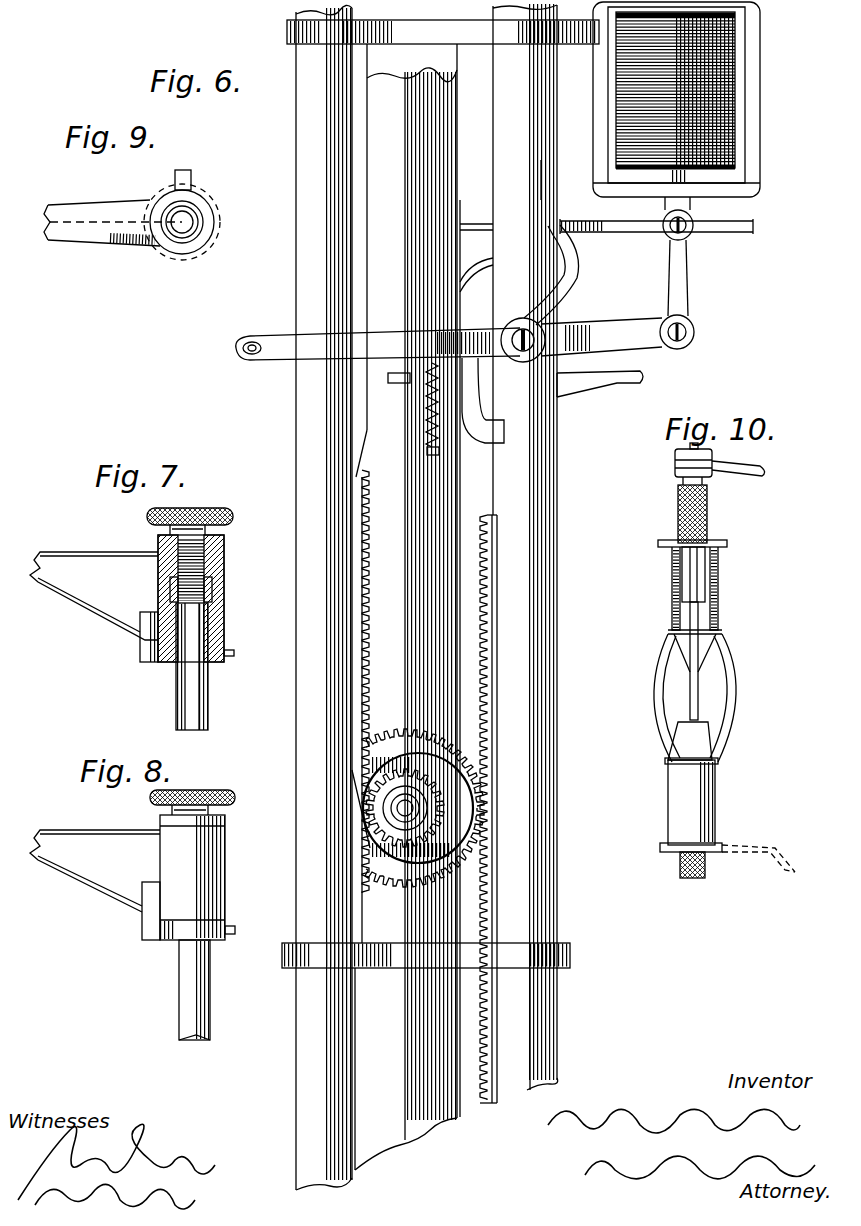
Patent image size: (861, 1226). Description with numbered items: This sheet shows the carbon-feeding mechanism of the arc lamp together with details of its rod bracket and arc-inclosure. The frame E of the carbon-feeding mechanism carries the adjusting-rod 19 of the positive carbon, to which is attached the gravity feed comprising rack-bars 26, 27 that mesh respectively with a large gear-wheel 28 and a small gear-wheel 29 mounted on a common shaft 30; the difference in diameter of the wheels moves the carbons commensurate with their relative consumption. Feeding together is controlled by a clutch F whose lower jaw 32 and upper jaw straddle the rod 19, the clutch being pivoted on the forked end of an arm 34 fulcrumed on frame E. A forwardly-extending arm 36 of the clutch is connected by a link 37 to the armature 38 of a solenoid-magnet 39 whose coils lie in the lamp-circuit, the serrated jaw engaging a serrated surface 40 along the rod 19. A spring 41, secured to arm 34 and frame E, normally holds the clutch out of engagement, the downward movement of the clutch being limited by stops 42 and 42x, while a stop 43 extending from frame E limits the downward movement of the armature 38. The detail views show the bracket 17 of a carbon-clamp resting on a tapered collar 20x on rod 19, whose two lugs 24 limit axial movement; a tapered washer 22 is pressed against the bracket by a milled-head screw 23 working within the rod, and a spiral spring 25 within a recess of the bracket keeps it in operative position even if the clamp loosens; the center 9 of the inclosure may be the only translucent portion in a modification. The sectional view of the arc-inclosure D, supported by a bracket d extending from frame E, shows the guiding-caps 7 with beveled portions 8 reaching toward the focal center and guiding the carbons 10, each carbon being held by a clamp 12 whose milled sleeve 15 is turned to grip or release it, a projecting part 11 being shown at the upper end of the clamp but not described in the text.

In FIG. 10, the cap 7 is at (691, 801).
In FIG. 10, the beveled portion 8 is at (710, 668).
In FIG. 7, the center of arc-inclosure 9 is at (158, 592).
In FIG. 10, the carbon 10 is at (675, 650).
In FIG. 10, the handle pin 11 is at (742, 466).
In FIG. 10, the clamp 12 is at (702, 573).
In FIG. 10, the sleeve 15 is at (678, 506).
In FIG. 10, the bracket 17 is at (700, 614).
In FIG. 6, the rod 19 is at (558, 600).
In FIG. 7, the rod 19 is at (224, 606).
In FIG. 8, the rod 19 is at (194, 990).
In FIG. 7, the collar 20x is at (150, 660).
In FIG. 8, the collar 20x is at (152, 940).
In FIG. 7, the washer 22 is at (222, 548).
In FIG. 8, the washer 22 is at (222, 826).
In FIG. 7, the screw 23 is at (206, 508).
In FIG. 8, the screw 23 is at (208, 790).
In FIG. 7, the lug 24 is at (140, 640).
In FIG. 8, the lug 24 is at (142, 918).
In FIG. 9, the lug 24 is at (188, 172).
In FIG. 7, the spiral spring 25 is at (224, 582).
In FIG. 9, the spiral spring 25 is at (196, 210).
In FIG. 6, the rack-bar 26 is at (498, 690).
In FIG. 6, the rack-bar 27 is at (368, 672).
In FIG. 7, the rack-bar 27 is at (226, 660).
In FIG. 8, the rack-bar 27 is at (232, 927).
In FIG. 6, the large gear-wheel 28 is at (420, 738).
In FIG. 6, the small gear-wheel 29 is at (363, 816).
In FIG. 6, the common shaft 30 is at (410, 803).
In FIG. 6, the lower jaw 32 is at (490, 440).
In FIG. 6, the arm 34 is at (408, 347).
In FIG. 6, the forwardly-extending arm 36 is at (606, 328).
In FIG. 6, the link 37 is at (566, 226).
In FIG. 6, the armature 38 is at (745, 196).
In FIG. 6, the solenoid-magnet 39 is at (728, 110).
In FIG. 6, the serrated surface 40 is at (541, 170).
In FIG. 6, the spring 41 is at (424, 405).
In FIG. 6, the stop 42 is at (400, 383).
In FIG. 6, the stop 42x is at (618, 378).
In FIG. 6, the stop 43 is at (752, 229).
In FIG. 6, the frame E is at (394, 597).
In FIG. 6, the clutch F is at (540, 293).
In FIG. 10, the arc-inclosure D is at (726, 672).
In FIG. 10, the bracket d is at (724, 846).